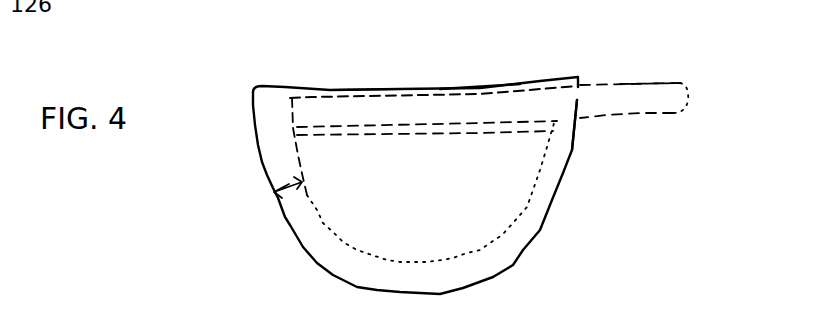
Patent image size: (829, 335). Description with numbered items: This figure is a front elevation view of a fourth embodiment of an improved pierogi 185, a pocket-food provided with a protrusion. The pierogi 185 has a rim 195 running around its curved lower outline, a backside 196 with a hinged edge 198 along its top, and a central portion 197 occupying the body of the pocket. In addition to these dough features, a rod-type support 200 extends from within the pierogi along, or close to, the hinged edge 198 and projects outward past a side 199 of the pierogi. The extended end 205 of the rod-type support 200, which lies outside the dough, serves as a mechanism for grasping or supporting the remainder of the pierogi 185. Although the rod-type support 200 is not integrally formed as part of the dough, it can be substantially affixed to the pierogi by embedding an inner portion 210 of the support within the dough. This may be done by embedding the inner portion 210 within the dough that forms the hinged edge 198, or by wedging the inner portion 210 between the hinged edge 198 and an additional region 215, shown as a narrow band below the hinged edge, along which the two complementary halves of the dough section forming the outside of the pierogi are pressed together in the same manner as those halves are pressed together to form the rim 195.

The pierogi 185 is at (590, 52).
The rim 195 is at (302, 185).
The backside 196 is at (392, 85).
The hinged edge 198 is at (365, 89).
The central portion 197 is at (500, 183).
The side 199 is at (583, 140).
The rod-type support 200 is at (587, 83).
The extended end 205 is at (647, 82).
The inner portion 210 is at (478, 88).
The additional region 215 is at (341, 130).